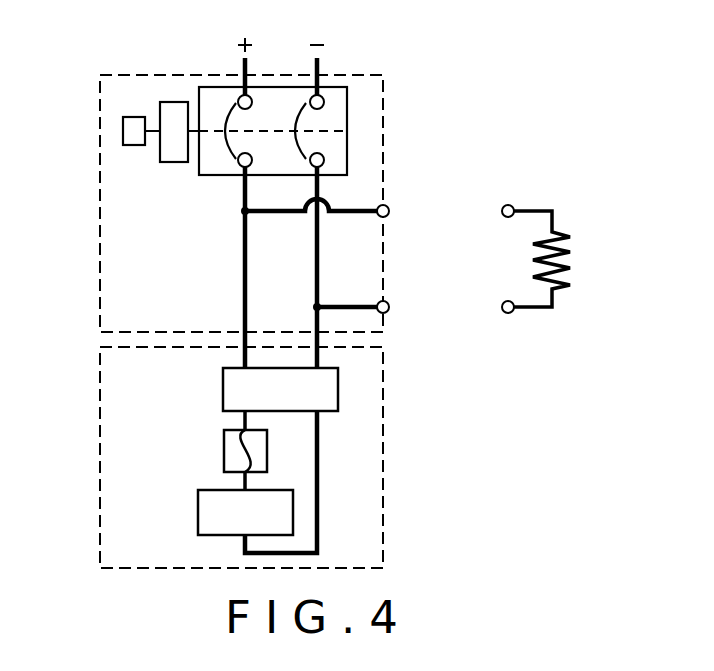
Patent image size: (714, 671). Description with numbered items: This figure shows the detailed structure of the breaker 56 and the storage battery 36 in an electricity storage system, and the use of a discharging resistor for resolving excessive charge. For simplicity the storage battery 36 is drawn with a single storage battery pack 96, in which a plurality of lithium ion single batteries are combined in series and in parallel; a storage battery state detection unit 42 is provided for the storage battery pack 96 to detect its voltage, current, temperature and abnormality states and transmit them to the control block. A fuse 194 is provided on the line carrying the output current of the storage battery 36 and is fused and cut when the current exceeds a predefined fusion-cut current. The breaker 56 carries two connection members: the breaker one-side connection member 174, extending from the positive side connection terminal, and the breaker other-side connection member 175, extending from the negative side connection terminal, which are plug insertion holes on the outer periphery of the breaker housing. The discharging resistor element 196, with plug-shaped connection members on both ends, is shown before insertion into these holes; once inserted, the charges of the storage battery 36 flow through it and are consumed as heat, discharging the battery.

The storage battery 36 is at (99, 478).
The storage battery state detection unit 42 is at (223, 388).
The breaker 56 is at (99, 219).
The storage battery pack 96 is at (197, 509).
The breaker one-side connection member 174 is at (391, 211).
The breaker other-side connection member 175 is at (391, 307).
The fuse 194 is at (223, 448).
The discharging resistor element 196 is at (574, 259).